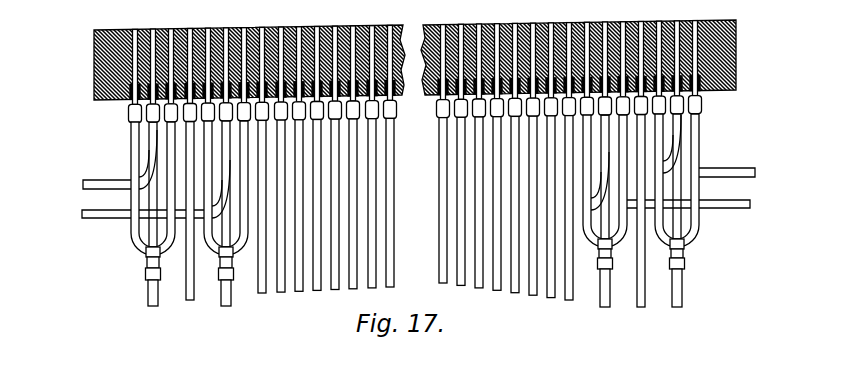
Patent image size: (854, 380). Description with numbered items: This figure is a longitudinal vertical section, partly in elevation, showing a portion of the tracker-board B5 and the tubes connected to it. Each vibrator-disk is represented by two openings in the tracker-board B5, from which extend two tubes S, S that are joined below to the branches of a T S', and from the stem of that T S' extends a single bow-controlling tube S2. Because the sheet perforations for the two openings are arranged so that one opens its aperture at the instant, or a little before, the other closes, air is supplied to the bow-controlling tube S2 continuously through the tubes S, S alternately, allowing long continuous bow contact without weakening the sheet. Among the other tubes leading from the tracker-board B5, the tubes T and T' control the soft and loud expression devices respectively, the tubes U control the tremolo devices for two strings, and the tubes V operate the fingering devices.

The tracker-board B5 is at (751, 56).
The tubes S is at (411, 138).
The T S' is at (412, 260).
The bow-controlling tube S2 is at (698, 284).
The tube T is at (92, 185).
The tube T' is at (735, 167).
The tubes U is at (760, 203).
The tubes V is at (329, 294).